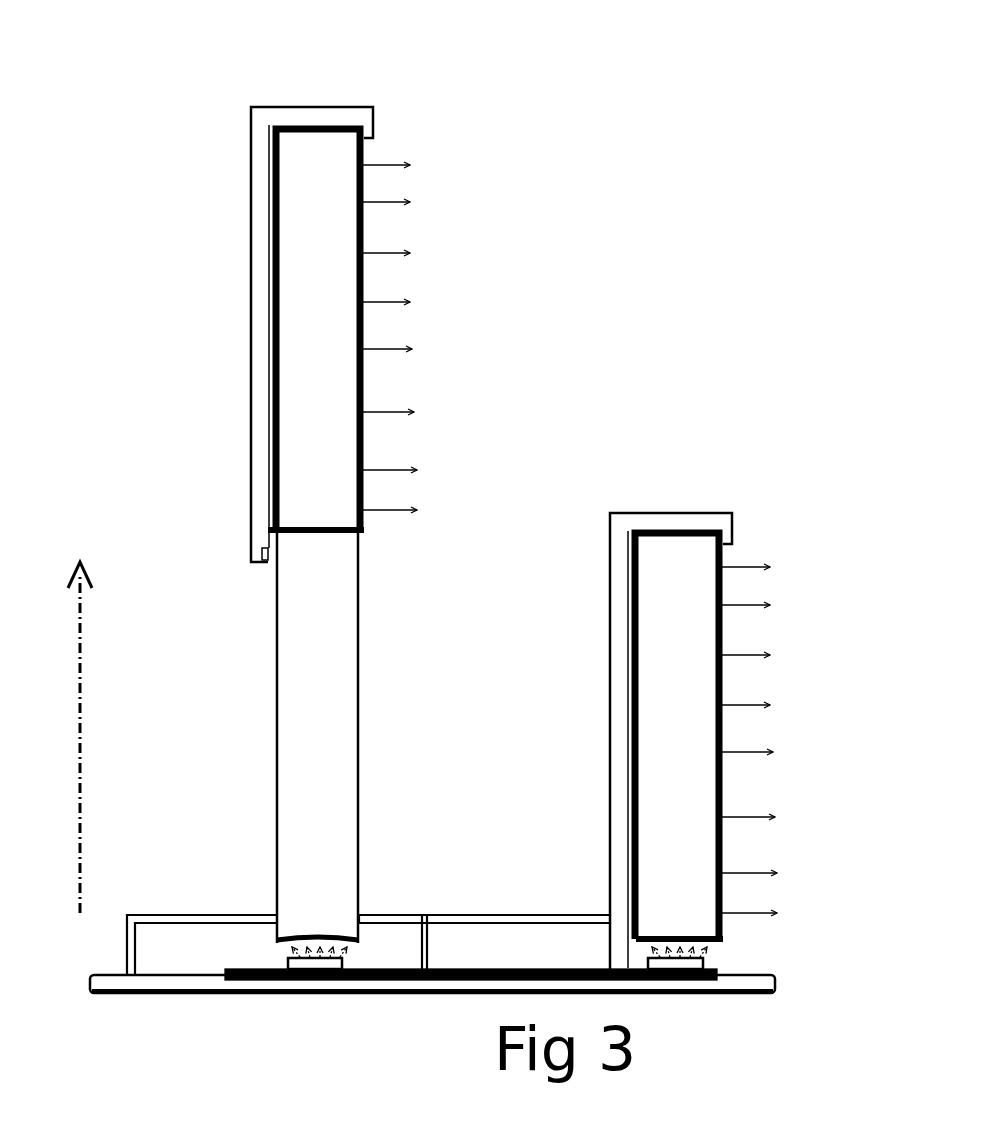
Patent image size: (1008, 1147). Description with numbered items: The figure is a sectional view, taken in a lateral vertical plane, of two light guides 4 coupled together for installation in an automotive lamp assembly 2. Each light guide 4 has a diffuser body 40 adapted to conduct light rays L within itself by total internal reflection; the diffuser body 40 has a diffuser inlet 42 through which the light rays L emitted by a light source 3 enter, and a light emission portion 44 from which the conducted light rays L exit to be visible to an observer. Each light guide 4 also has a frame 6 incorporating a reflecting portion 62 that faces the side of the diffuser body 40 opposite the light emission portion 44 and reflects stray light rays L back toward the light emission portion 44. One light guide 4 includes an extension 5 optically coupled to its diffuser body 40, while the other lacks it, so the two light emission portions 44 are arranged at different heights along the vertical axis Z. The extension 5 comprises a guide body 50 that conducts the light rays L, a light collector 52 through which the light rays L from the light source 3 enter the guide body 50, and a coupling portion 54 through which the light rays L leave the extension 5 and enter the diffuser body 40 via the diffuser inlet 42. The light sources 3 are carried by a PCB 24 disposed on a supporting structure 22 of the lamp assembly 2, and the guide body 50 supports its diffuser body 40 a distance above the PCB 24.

The motor vehicle lamp assembly 2 is at (172, 88).
The light source 3 is at (327, 968).
The light guide 4 is at (502, 185).
The extension 5 is at (386, 703).
The frame 6 is at (251, 244).
The supporting structure 22 is at (185, 988).
The PCB 24 is at (540, 968).
The diffuser body 40 is at (360, 387).
The diffuser inlet 42 is at (301, 505).
The light emission portion 44 is at (362, 282).
The guide body 50 is at (305, 681).
The light collector 52 is at (278, 954).
The coupling portion 54 is at (301, 556).
The reflecting portion 62 is at (262, 352).
The light rays L is at (406, 162).
The vertical axis Z is at (82, 762).